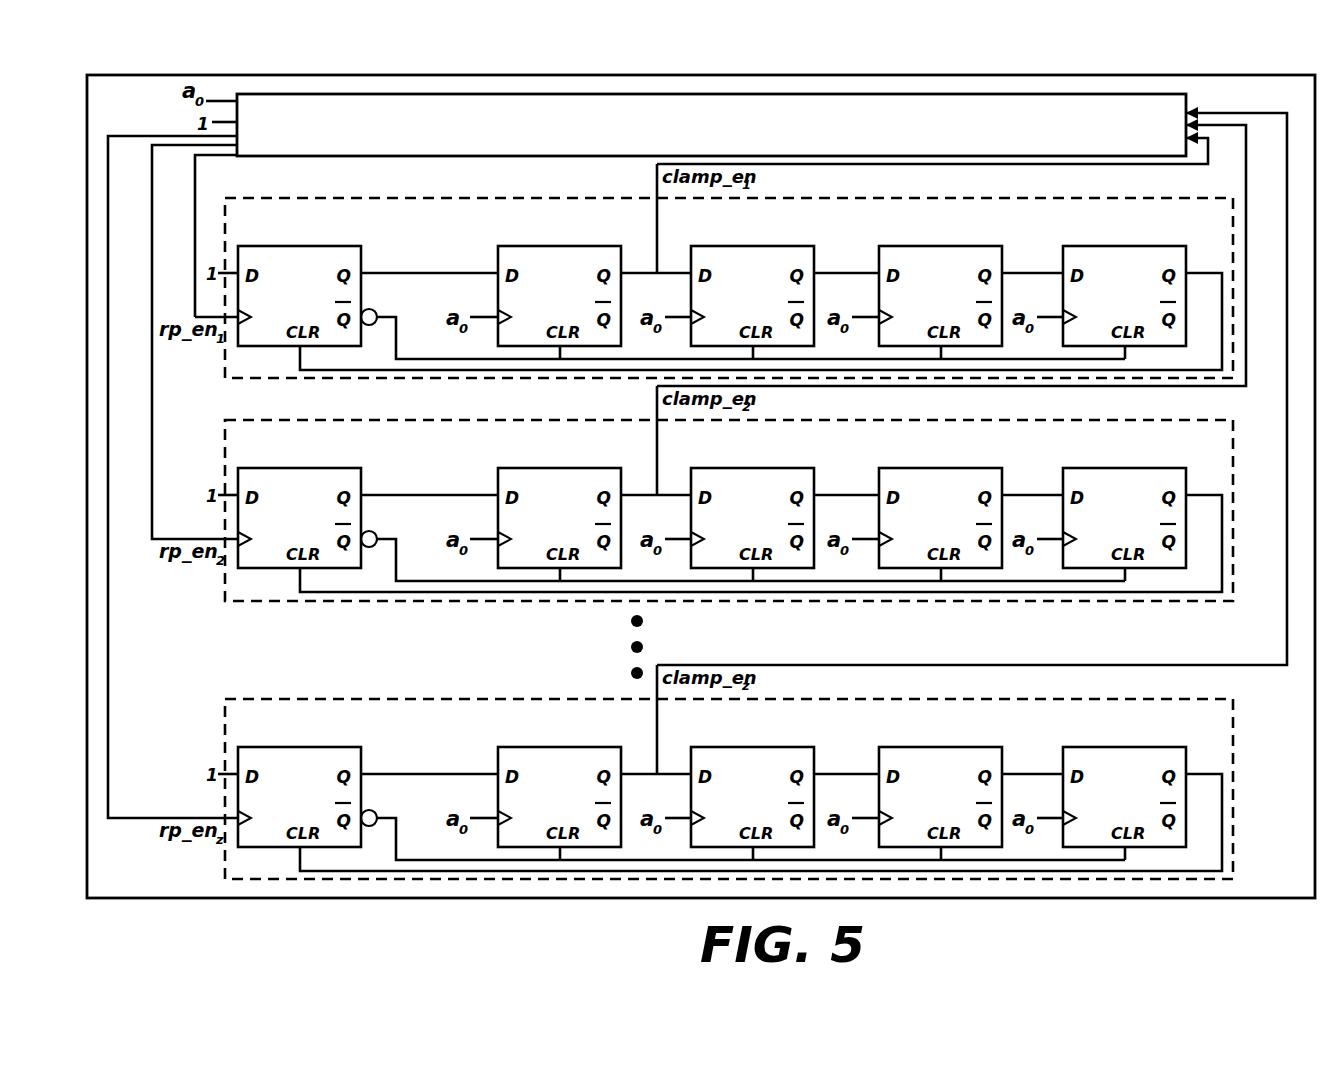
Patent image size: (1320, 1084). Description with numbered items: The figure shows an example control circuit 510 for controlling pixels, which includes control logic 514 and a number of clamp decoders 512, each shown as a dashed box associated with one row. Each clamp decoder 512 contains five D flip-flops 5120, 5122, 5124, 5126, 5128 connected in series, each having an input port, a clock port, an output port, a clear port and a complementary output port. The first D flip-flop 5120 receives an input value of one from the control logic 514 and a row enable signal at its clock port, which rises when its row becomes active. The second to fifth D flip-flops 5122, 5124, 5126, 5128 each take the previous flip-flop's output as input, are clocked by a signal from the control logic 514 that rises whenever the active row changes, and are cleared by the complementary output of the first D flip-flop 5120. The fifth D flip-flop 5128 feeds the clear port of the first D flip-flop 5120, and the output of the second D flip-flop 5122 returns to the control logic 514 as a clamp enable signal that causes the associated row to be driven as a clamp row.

The control circuit 510 is at (760, 67).
The clamp decoder 512 is at (347, 194).
The control logic 514 is at (759, 149).
The first D flip-flop 5120 is at (299, 246).
The second D flip-flop 5122 is at (561, 246).
The third D flip-flop 5124 is at (758, 246).
The fourth D flip-flop 5126 is at (952, 246).
The fifth D flip-flop 5128 is at (1137, 246).